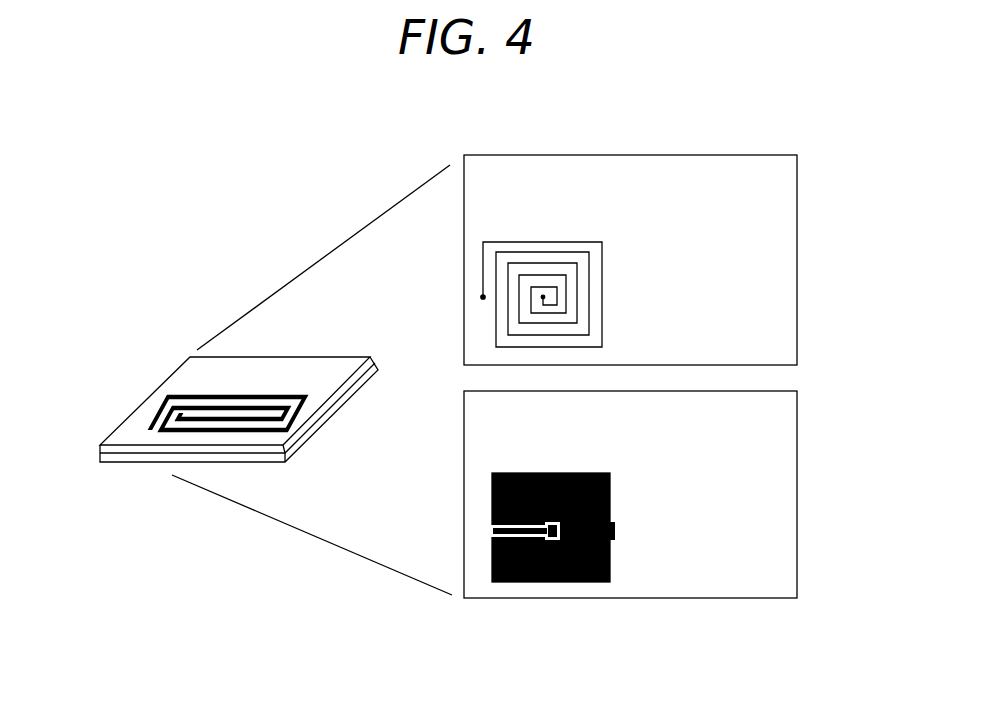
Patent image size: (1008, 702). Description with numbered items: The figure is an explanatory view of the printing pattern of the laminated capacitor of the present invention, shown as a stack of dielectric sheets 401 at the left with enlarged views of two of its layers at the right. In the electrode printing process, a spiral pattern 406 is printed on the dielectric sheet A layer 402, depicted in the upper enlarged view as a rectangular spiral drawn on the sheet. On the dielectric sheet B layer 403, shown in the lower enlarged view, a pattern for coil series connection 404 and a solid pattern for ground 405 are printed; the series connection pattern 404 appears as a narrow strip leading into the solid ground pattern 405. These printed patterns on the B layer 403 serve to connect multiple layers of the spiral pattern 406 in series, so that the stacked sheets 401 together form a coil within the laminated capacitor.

The multilayer antenna substrate 401 is at (170, 378).
The dielectric sheet A layer 402 is at (777, 178).
The dielectric sheet B layer 403 is at (777, 588).
The pattern for coil series connection 404 is at (492, 530).
The solid pattern for ground 405 is at (492, 493).
The spiral pattern 406 is at (483, 267).